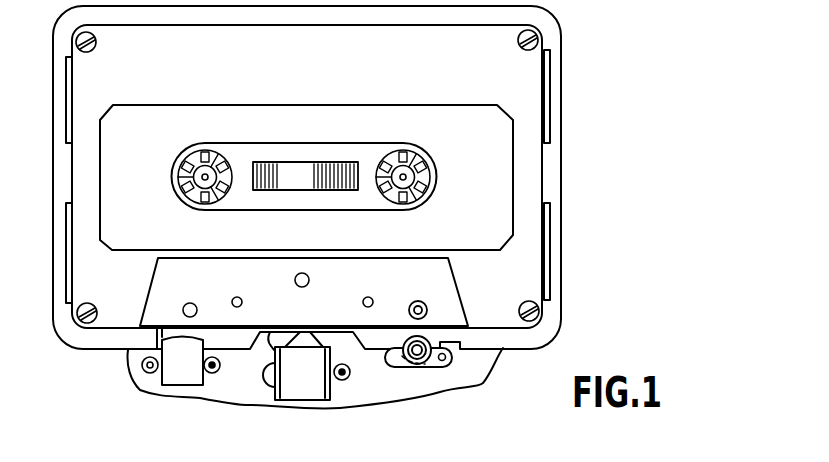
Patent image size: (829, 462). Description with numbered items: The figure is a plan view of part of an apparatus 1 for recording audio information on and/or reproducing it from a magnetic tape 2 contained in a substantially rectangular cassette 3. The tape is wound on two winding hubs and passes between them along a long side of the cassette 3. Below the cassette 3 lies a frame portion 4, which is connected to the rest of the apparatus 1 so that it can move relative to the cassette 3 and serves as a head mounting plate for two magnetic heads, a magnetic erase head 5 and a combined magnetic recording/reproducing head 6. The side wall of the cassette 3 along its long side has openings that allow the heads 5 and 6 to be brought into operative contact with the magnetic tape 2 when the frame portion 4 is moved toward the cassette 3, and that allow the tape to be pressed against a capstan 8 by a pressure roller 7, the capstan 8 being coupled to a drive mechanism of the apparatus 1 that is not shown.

The apparatus 1 is at (458, 377).
The magnetic tape 2 is at (322, 162).
The cassette 3 is at (530, 168).
The frame portion 4 is at (373, 388).
The magnetic erase head 5 is at (180, 372).
The combined magnetic recording/reproducing head 6 is at (305, 385).
The pressure roller 7 is at (422, 338).
The capstan 8 is at (424, 304).